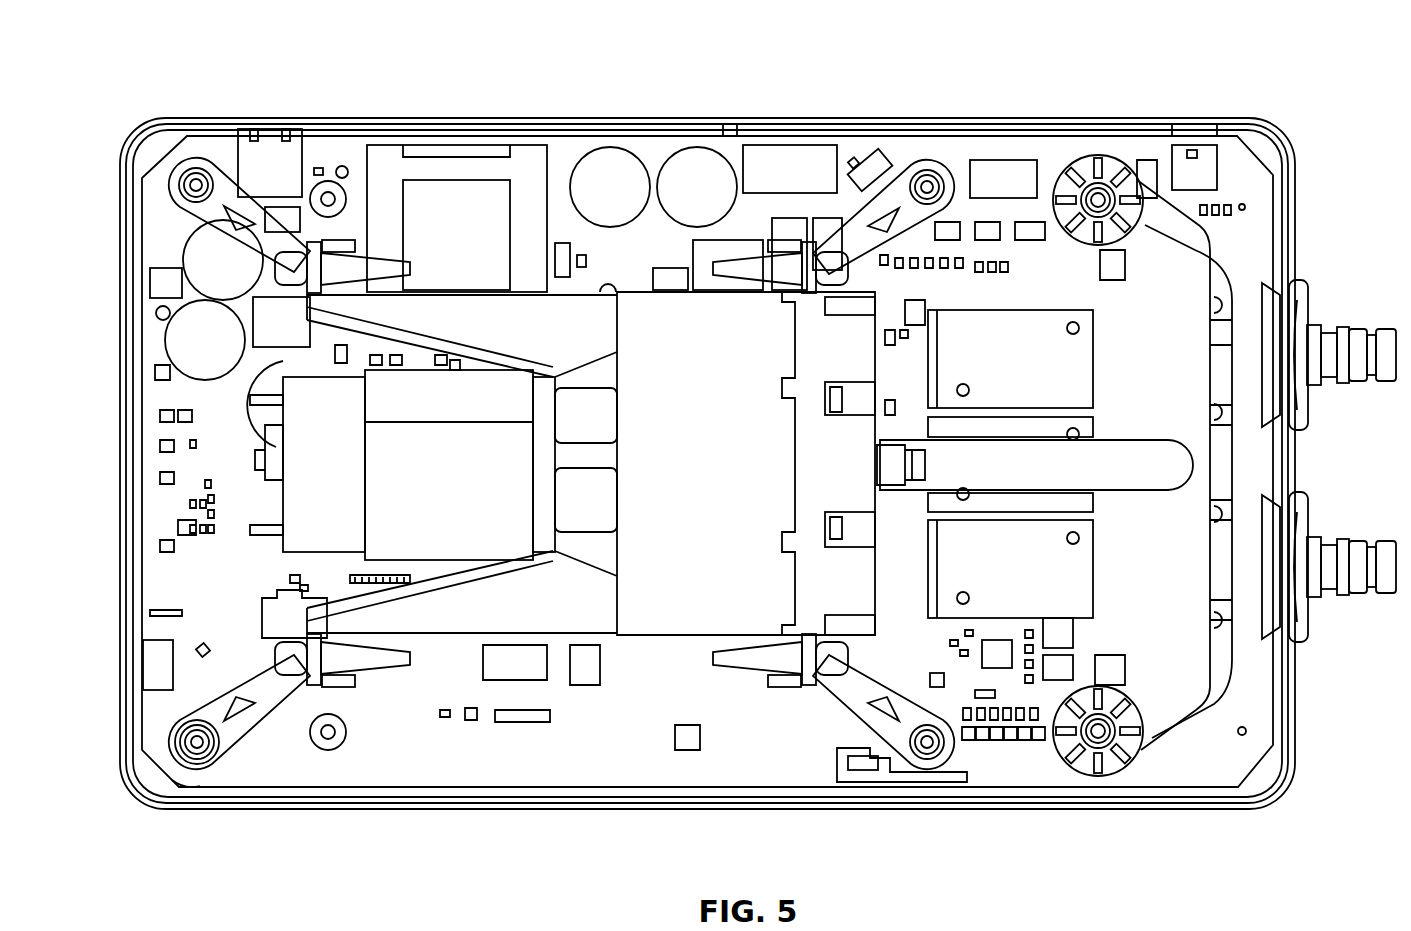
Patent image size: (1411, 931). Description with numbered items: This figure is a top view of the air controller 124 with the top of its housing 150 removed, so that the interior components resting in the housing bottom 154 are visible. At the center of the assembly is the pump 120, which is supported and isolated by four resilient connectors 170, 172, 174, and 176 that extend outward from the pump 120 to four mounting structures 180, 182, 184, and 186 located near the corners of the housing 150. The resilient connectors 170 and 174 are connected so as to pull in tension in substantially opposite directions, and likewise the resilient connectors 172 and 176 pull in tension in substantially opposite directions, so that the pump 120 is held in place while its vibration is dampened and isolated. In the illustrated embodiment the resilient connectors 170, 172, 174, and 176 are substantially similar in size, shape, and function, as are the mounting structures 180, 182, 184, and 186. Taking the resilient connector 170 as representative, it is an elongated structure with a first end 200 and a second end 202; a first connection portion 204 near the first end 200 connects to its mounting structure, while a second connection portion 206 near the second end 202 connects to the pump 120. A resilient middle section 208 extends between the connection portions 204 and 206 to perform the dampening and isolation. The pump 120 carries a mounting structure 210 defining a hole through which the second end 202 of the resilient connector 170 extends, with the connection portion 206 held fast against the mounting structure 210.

The air controller 124 is at (537, 83).
The pump 120 is at (770, 359).
The housing 150 is at (1266, 795).
The housing bottom 154 is at (1291, 744).
The resilient connector 170 is at (224, 760).
The resilient connector 172 is at (873, 732).
The resilient connector 174 is at (900, 190).
The resilient connector 176 is at (226, 186).
The mounting structure 180 is at (197, 745).
The mounting structure 182 is at (928, 746).
The mounting structure 184 is at (928, 184).
The mounting structure 186 is at (195, 182).
The first end 200 is at (180, 778).
The second end 202 is at (368, 658).
The first connection portion 204 is at (180, 762).
The second connection portion 206 is at (337, 662).
The resilient middle section 208 is at (223, 703).
The mounting structure 210 is at (310, 672).